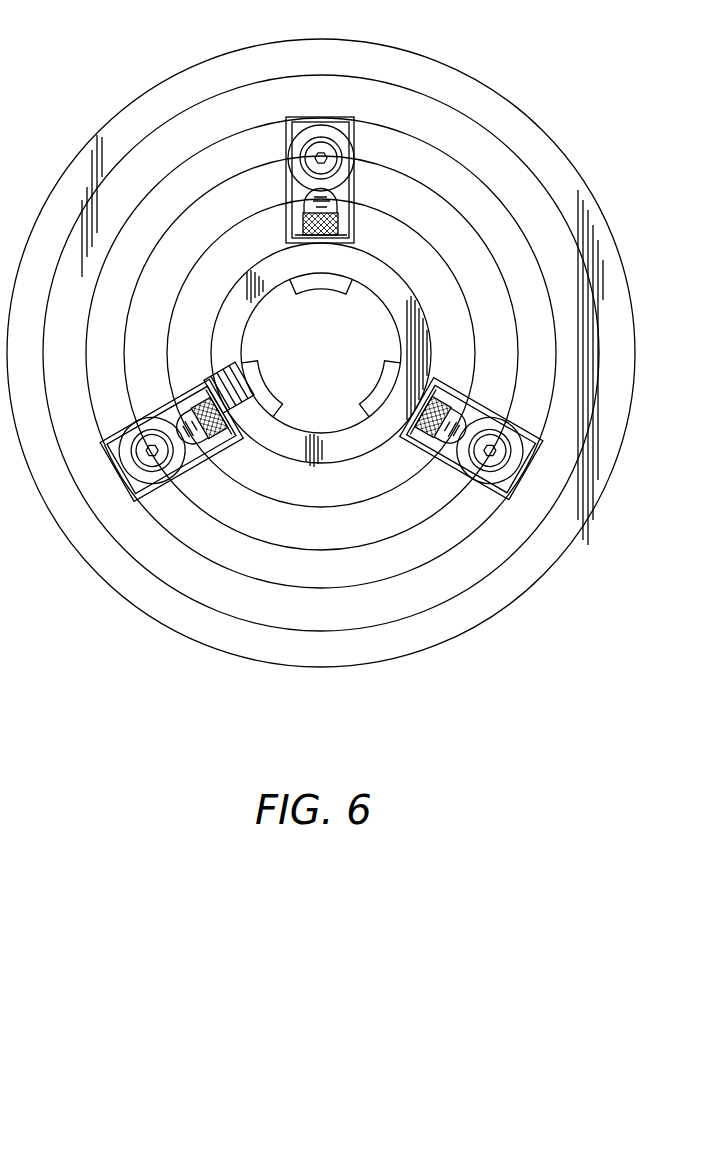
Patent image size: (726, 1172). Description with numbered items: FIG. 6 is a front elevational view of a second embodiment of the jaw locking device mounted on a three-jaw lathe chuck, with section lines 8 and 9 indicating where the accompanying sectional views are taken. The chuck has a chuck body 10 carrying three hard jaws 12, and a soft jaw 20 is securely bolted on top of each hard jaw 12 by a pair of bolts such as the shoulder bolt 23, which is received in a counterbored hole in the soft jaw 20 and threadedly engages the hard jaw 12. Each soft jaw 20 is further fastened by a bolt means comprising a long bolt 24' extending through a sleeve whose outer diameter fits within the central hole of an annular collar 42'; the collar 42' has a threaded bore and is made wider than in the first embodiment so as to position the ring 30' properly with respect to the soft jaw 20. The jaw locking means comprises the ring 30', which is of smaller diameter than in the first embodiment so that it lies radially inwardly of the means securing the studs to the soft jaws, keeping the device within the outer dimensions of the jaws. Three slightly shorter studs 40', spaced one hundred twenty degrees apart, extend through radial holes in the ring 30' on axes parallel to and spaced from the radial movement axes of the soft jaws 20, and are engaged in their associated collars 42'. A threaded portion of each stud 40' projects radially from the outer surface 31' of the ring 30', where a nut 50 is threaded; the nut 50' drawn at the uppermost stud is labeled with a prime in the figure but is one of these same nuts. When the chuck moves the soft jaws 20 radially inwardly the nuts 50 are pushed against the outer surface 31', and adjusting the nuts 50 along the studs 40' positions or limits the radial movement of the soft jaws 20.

The section line 8- 8 is at (322, 50).
The section line 9- 9 is at (243, 147).
The chuck body 10 is at (545, 136).
The hard jaw 12 is at (287, 243).
The soft jaw 20 is at (274, 407).
The shoulder bolt 23 is at (353, 201).
The long bolt 24' is at (321, 310).
The ring 30' is at (338, 355).
The outer surface of the ring 31' is at (253, 380).
The stud 40' is at (303, 319).
The annular collar 42' is at (344, 315).
The nut 50 is at (321, 440).
The spring element 50' is at (355, 234).